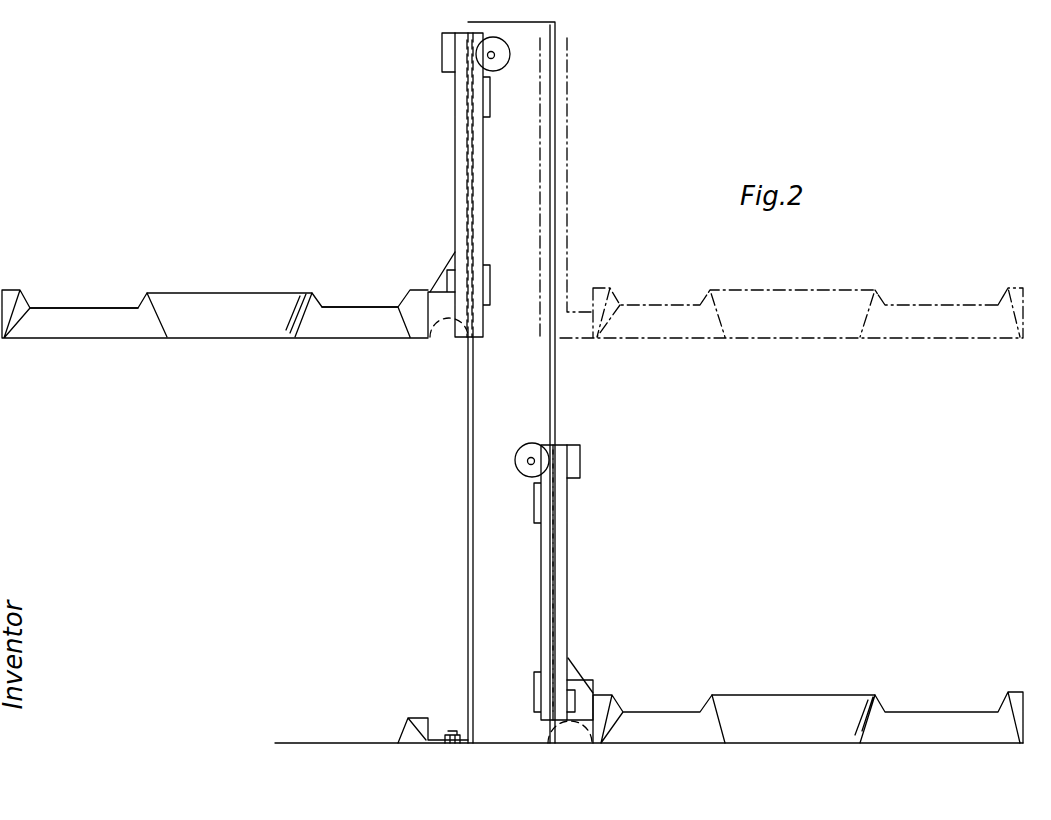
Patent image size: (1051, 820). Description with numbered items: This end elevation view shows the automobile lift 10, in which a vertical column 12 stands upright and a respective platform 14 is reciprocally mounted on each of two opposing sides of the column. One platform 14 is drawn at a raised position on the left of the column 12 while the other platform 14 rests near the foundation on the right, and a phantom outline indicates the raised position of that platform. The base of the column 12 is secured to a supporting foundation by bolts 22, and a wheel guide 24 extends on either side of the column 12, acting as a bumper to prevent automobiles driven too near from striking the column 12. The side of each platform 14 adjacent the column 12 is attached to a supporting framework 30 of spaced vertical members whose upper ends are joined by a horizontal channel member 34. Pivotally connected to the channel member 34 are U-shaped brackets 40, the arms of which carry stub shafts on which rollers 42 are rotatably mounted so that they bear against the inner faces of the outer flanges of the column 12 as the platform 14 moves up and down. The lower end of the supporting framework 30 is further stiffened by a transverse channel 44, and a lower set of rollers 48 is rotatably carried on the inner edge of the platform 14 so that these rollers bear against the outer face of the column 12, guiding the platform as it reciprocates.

The automobile lift 10 is at (680, 286).
The vertical column 12 is at (567, 248).
The platform 14 is at (265, 293).
The bolts 22 is at (455, 735).
The wheel guide 24 is at (88, 302).
The supporting framework 30 is at (579, 552).
The horizontal channel member 34 is at (576, 460).
The U-shaped bracket 40 is at (578, 445).
The roller 42 is at (490, 38).
The transverse channel 44 is at (576, 692).
The lower set of rollers 48 is at (450, 340).